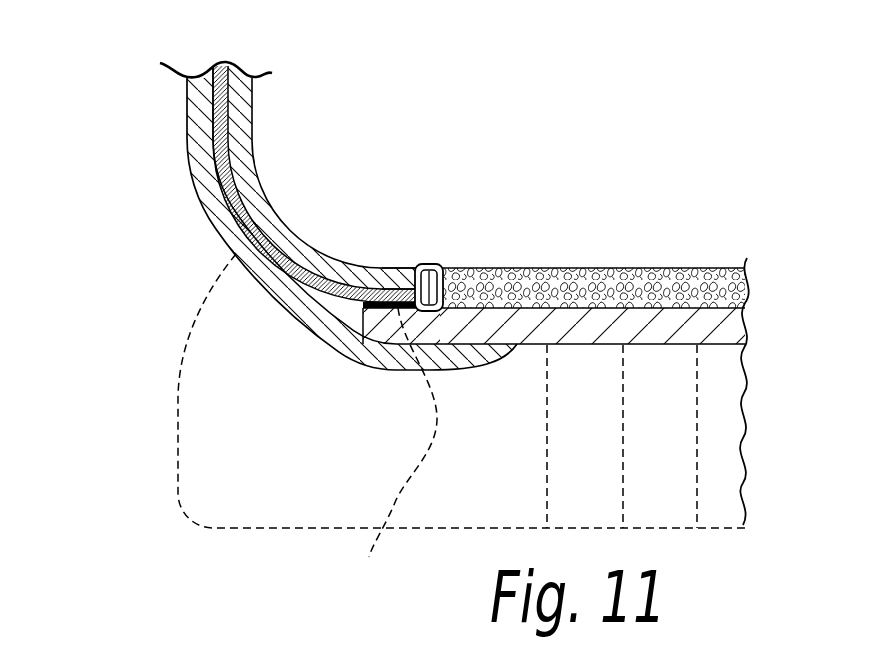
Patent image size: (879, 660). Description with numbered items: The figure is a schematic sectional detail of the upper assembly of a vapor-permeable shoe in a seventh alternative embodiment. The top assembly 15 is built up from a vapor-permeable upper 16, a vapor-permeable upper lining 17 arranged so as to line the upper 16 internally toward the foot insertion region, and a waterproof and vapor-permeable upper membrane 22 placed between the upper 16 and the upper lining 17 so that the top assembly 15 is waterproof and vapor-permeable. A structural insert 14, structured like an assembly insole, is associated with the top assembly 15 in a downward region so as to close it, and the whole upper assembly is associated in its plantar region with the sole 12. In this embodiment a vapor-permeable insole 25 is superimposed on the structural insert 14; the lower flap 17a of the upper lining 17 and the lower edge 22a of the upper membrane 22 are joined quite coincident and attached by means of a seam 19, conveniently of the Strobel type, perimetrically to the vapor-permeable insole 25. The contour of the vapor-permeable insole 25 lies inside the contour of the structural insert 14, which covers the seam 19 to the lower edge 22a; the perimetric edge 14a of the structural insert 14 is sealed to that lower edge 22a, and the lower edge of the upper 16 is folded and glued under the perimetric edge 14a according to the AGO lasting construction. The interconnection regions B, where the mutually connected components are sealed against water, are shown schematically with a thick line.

The sole 12 is at (169, 431).
The structural insert 14 is at (541, 296).
The perimetric edge of the structural insert 14a is at (393, 322).
The top assembly 15 is at (181, 173).
The vapor-permeable upper 16 is at (396, 192).
The vapor-permeable upper lining 17 is at (261, 110).
The lower flap of the upper lining 17a is at (397, 267).
The seam 19 is at (430, 265).
The waterproof and vapor-permeable upper membrane 22 is at (203, 107).
The lower edge of the upper membrane 22a is at (382, 267).
The vapor-permeable insole 25 is at (655, 257).
The interconnection regions B is at (397, 451).